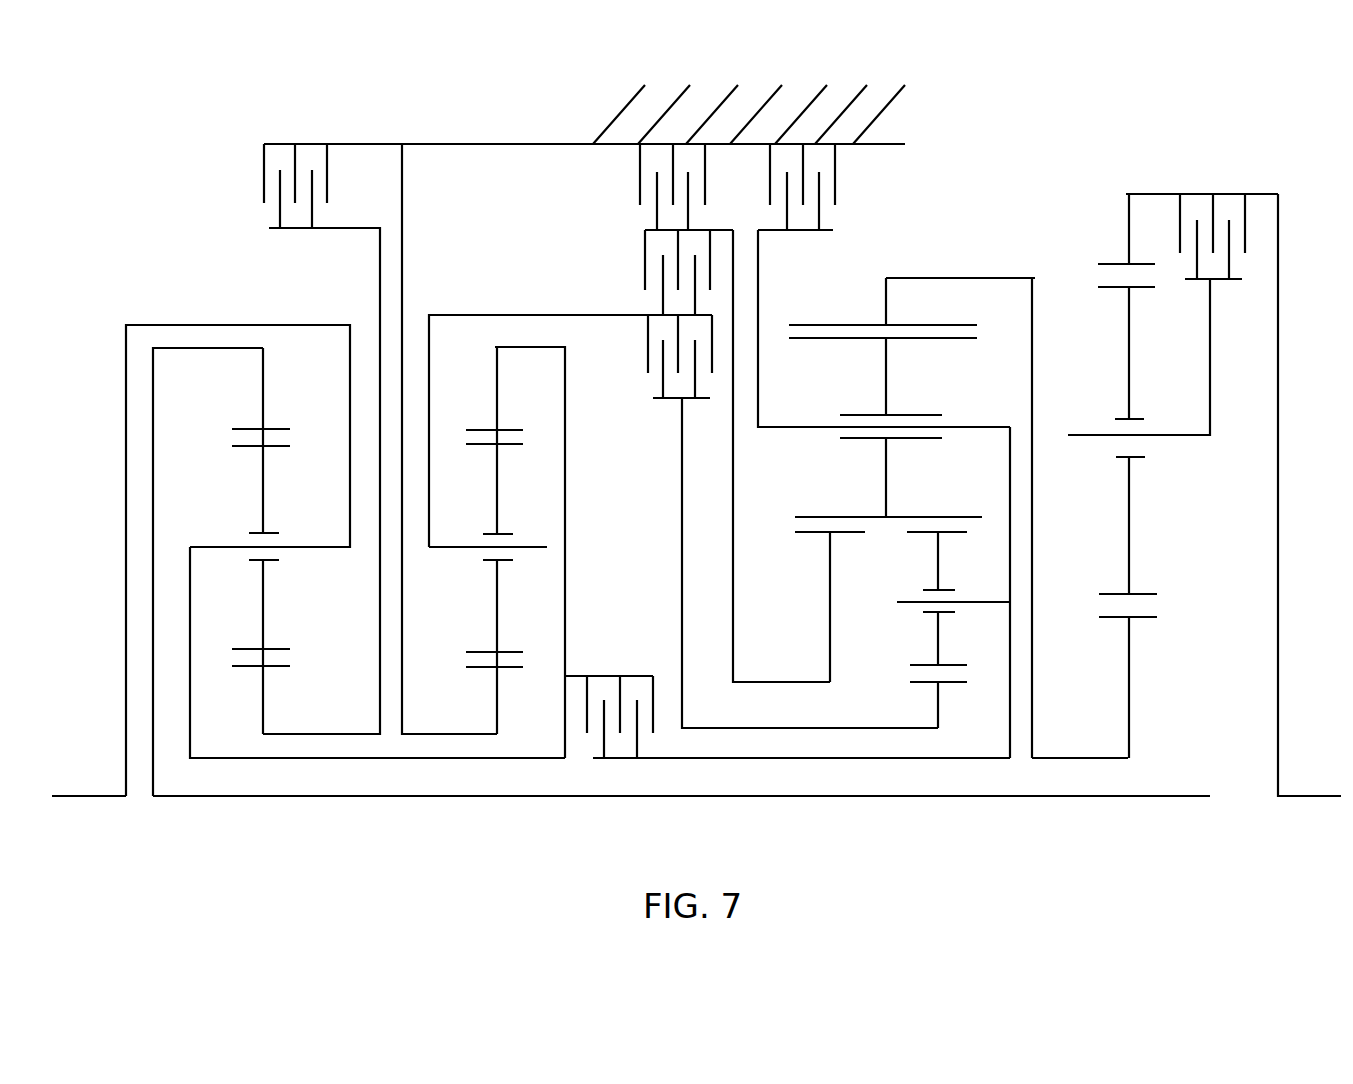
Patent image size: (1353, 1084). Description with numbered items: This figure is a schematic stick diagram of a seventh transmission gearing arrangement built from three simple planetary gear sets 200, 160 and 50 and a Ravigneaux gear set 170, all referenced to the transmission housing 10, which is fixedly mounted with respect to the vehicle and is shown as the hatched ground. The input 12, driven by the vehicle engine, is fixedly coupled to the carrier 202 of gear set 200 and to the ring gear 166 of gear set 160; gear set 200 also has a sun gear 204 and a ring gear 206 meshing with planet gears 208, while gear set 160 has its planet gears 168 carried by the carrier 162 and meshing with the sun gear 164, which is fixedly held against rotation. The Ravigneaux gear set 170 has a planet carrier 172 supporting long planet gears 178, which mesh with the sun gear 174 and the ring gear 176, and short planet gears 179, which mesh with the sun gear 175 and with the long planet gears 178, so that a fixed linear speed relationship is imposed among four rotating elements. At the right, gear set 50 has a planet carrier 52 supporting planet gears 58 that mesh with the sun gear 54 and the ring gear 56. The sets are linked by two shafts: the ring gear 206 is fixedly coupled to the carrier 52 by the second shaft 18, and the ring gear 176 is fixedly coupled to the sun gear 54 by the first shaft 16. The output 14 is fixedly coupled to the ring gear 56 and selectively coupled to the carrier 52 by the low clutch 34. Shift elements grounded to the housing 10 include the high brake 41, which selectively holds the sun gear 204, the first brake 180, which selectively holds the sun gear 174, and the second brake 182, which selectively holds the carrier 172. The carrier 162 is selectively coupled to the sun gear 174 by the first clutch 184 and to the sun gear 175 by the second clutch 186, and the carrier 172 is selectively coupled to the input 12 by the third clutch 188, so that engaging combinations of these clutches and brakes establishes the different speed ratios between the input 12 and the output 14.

The transmission housing 10 is at (625, 108).
The input 12 is at (275, 325).
The output 14 is at (1326, 796).
The first shaft 16 is at (1056, 758).
The second shaft 18 is at (735, 796).
The low clutch 34 is at (1198, 194).
The high brake 41 is at (264, 175).
The simple planetary gear set 50 is at (1155, 523).
The planet carrier 52 is at (1075, 435).
The sun gear 54 is at (1129, 724).
The ring gear 56 is at (1127, 232).
The planet gears 58 is at (1128, 353).
The simple planetary gear set 160 is at (525, 496).
The carrier 162 is at (460, 549).
The sun gear 164 is at (500, 702).
The ring gear 166 is at (495, 372).
The planet gears 168 is at (500, 495).
The Ravigneaux gear set 170 is at (884, 541).
The planet carrier 172 is at (985, 427).
The sun gear 174 is at (830, 630).
The sun gear 175 is at (938, 712).
The ring gear 176 is at (886, 300).
The long planet gears 178 is at (886, 382).
The short planet gears 179 is at (938, 657).
The first brake 180 is at (640, 177).
The second brake 182 is at (835, 178).
The first clutch 184 is at (645, 265).
The second clutch 186 is at (647, 340).
The third clutch 188 is at (600, 676).
The simple planetary gear set 200 is at (681, 539).
The carrier 202 is at (195, 547).
The sun gear 204 is at (268, 692).
The ring gear 206 is at (263, 390).
The planet gears 208 is at (265, 473).